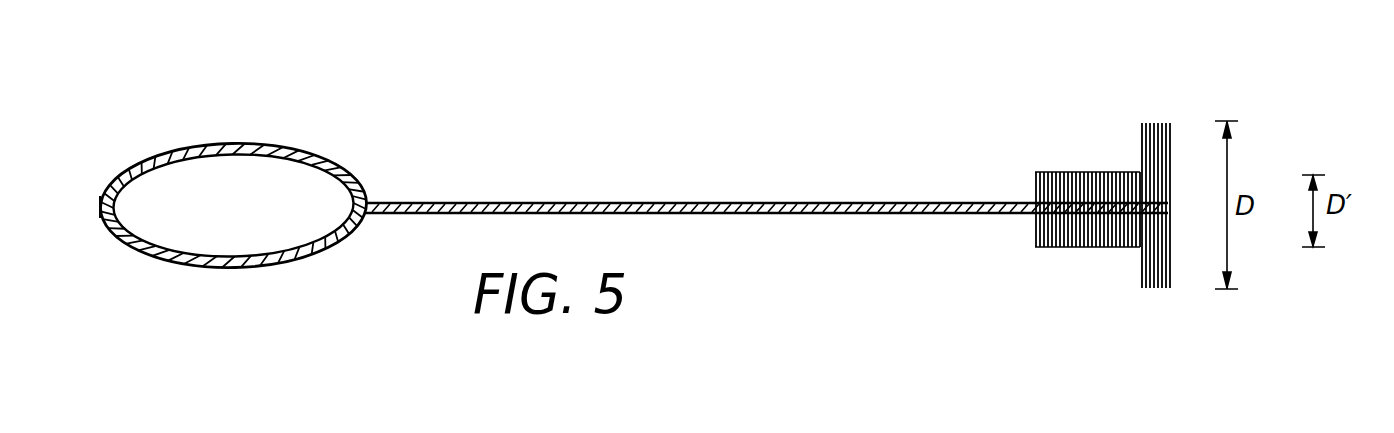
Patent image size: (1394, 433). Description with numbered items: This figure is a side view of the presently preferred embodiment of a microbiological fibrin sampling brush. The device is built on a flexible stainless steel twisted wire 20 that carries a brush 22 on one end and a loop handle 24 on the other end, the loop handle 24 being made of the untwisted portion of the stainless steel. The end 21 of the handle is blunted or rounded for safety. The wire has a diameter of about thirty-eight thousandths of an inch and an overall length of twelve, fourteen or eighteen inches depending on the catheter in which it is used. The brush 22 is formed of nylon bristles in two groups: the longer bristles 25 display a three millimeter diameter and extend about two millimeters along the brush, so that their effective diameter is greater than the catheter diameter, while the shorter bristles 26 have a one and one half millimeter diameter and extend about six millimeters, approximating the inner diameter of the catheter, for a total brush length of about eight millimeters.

The flexible stainless steel twisted wire 20 is at (652, 202).
The end 21 is at (99, 200).
The brush 22 is at (1082, 142).
The loop handle 24 is at (223, 145).
The longer bristles 25 is at (1160, 123).
The shorter bristles 26 is at (1083, 243).